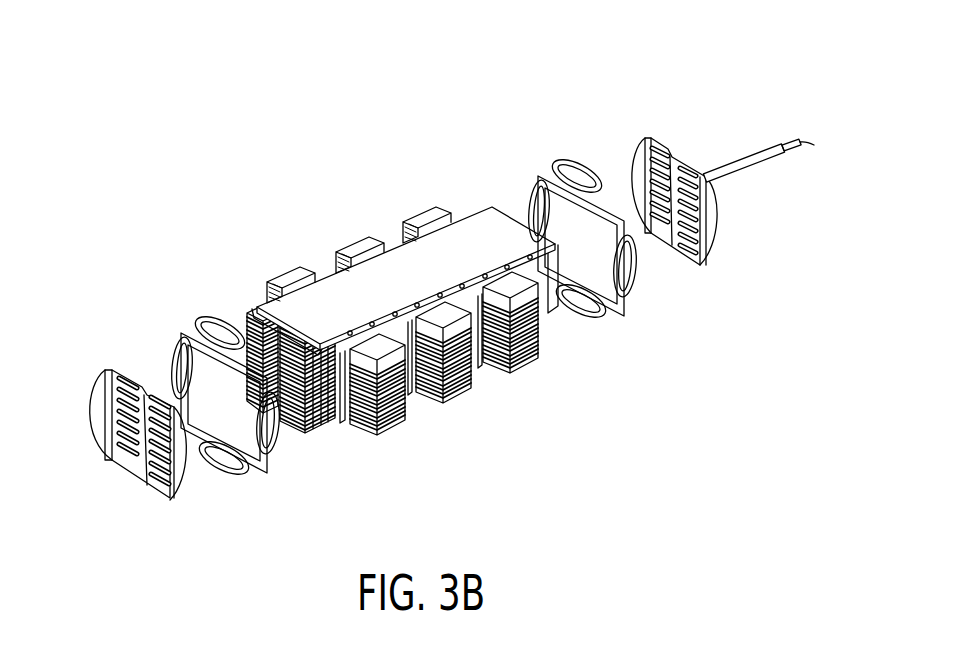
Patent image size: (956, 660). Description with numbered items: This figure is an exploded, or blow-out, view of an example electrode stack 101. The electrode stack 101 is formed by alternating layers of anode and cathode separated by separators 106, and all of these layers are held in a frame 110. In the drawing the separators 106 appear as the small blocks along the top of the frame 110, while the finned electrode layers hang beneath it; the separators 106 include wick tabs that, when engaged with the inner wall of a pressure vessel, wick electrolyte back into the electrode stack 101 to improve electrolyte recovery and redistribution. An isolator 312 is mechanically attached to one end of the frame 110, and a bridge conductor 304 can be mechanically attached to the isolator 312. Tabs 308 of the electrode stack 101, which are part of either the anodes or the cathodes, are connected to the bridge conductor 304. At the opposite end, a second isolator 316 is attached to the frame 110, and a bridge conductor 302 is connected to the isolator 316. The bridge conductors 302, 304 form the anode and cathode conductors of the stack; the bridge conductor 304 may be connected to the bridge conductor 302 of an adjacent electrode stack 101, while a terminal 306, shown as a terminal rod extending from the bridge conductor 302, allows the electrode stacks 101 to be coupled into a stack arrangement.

The electrode stack 101 is at (288, 210).
The separators 106 is at (418, 210).
The frame 110 is at (497, 238).
The bridge conductor 302 is at (650, 143).
The bridge conductor 304 is at (120, 370).
The terminal 306 is at (770, 184).
The tabs 308 is at (262, 311).
The isolator 312 is at (203, 322).
The isolator 316 is at (550, 181).